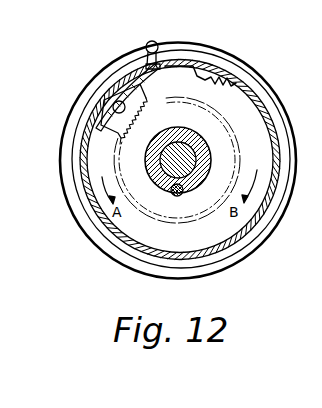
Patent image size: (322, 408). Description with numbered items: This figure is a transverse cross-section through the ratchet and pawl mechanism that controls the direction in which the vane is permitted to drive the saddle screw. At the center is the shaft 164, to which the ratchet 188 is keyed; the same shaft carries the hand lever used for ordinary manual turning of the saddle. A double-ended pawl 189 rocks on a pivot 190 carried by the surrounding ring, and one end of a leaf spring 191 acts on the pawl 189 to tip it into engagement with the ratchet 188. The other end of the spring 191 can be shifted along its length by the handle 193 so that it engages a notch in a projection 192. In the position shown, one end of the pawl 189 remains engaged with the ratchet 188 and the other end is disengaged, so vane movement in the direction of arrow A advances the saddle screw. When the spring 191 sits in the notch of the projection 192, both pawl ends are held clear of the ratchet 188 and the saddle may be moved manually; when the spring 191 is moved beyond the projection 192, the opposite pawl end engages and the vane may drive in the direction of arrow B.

The shaft 164 is at (192, 158).
The ratchet 188 is at (118, 141).
The pawl 189 is at (107, 119).
The pivot 190 is at (113, 106).
The leaf spring 191 is at (134, 72).
The projection 192 is at (236, 82).
The handle 193 is at (156, 41).